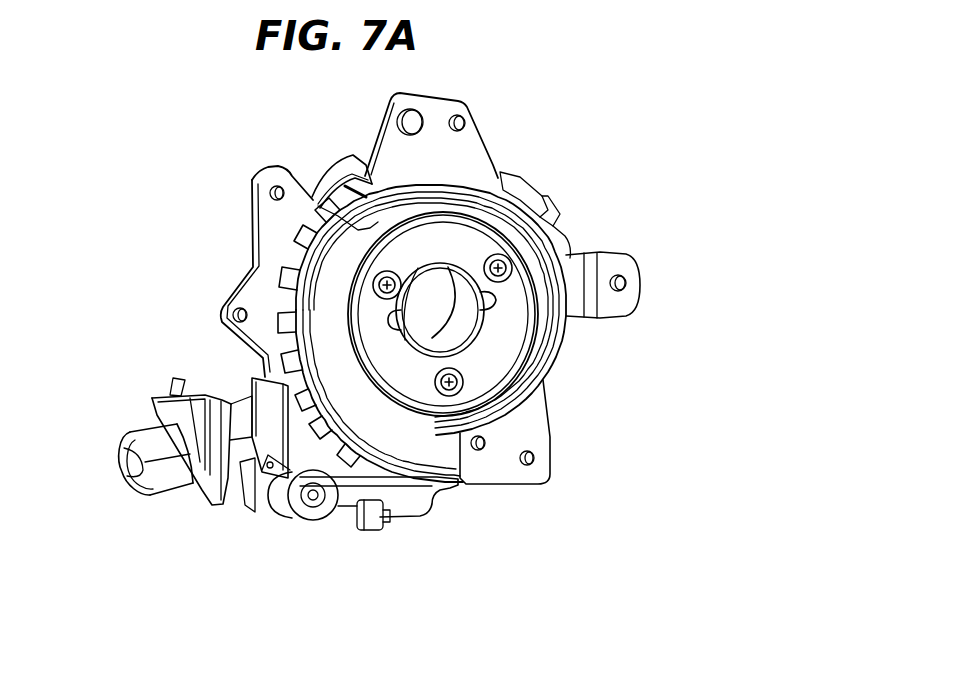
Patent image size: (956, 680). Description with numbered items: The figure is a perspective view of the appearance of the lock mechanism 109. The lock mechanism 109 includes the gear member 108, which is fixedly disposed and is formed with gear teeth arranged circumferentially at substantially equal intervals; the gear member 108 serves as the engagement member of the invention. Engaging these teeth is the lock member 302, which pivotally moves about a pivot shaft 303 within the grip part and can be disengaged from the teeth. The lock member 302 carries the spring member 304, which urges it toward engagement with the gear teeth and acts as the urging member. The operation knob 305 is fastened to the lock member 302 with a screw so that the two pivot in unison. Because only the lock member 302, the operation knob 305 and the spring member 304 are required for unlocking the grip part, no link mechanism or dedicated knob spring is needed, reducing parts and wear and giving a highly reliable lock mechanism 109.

The lock mechanism 109 is at (594, 208).
The gear member 108 is at (447, 461).
The lock member 302 is at (417, 493).
The pivot shaft 303 is at (317, 500).
The spring member 304 is at (287, 453).
The operation knob 305 is at (168, 467).